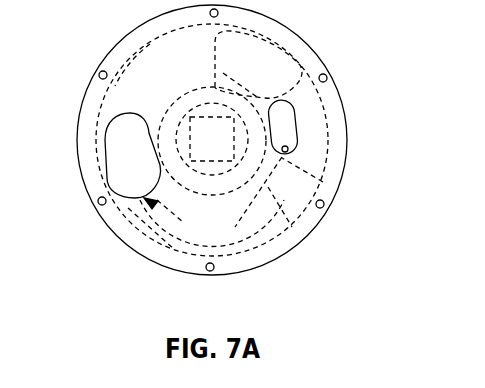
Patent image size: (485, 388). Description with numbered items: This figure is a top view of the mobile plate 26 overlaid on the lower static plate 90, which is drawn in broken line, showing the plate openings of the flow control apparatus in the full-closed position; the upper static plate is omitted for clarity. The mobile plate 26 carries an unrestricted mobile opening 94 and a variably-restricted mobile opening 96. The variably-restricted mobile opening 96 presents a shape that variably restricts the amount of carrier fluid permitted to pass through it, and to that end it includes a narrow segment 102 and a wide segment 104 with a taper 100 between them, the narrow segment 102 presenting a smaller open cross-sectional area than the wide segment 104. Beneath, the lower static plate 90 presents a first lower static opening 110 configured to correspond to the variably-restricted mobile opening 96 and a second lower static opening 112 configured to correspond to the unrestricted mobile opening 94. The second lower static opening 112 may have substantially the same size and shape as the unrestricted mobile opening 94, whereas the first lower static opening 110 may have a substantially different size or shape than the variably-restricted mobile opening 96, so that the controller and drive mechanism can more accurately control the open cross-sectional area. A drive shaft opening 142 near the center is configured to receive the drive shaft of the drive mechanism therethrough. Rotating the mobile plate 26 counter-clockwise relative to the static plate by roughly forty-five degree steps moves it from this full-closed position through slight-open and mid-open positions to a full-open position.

The mobile plate 26 is at (128, 63).
The lower static plate 90 is at (318, 229).
The unrestricted mobile opening 94 is at (321, 55).
The variably-restricted mobile opening 96 is at (126, 217).
The taper 100 is at (293, 229).
The narrow segment 102 is at (323, 182).
The wide segment 104 is at (183, 223).
The first lower static opening 110 is at (302, 132).
The second lower static opening 112 is at (104, 173).
The drive shaft opening 142 is at (187, 99).